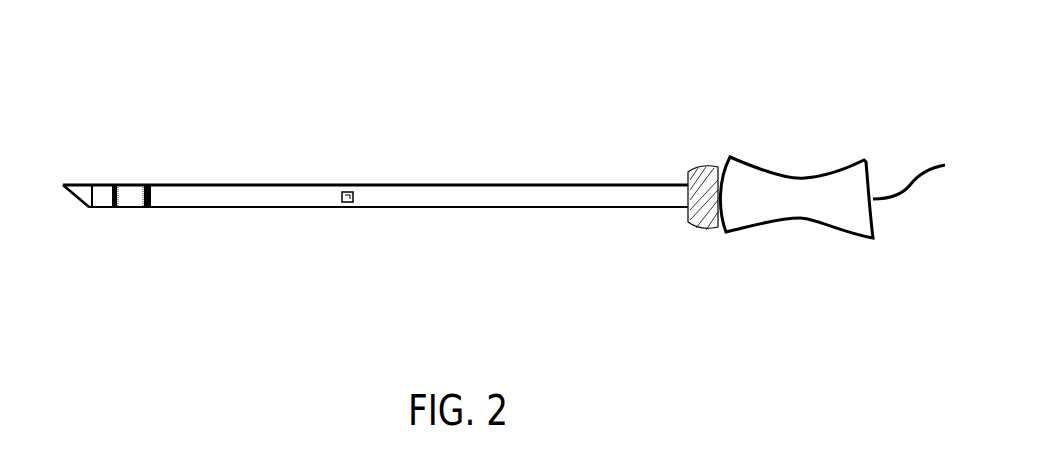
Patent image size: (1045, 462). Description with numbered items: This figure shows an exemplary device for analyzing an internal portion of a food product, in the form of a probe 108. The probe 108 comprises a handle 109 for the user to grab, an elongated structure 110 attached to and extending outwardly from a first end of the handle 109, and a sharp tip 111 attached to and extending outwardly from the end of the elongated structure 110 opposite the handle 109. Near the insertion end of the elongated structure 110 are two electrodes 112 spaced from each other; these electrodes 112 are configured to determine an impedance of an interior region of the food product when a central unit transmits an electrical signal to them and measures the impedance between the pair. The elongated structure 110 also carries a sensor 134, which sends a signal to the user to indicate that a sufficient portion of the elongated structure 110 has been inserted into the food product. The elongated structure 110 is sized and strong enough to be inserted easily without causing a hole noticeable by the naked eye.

The probe 108 is at (816, 138).
The handle 109 is at (838, 113).
The elongated structure 110 is at (453, 185).
The sharp tip 111 is at (72, 186).
The electrodes 112 is at (105, 178).
The sensor 134 is at (349, 191).